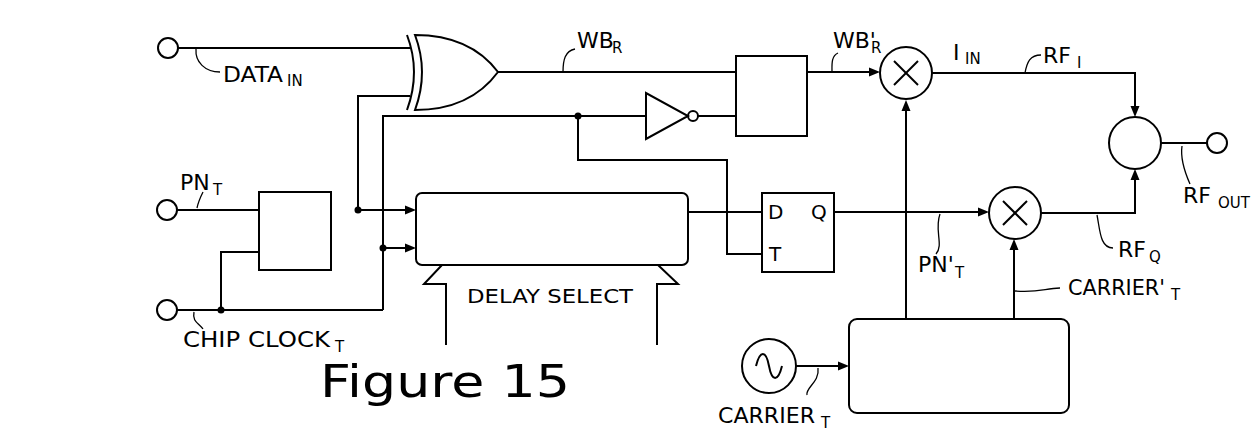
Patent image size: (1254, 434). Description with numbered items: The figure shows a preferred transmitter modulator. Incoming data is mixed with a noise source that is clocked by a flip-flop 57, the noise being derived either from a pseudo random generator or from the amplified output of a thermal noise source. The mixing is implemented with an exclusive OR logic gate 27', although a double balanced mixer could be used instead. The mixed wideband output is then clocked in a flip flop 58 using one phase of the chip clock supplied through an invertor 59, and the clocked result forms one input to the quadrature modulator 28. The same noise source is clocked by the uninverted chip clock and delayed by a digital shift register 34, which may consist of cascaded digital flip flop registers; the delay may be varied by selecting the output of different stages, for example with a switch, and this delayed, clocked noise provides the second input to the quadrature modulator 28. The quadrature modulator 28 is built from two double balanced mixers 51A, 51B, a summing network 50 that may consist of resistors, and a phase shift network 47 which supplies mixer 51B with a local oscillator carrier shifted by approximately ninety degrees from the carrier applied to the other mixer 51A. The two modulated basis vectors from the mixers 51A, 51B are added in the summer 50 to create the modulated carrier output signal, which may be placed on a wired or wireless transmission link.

The exclusive OR logic gate 27' is at (461, 57).
The flip-flop 57 is at (290, 192).
The digital shift register 34 is at (462, 193).
The invertor 59 is at (666, 130).
The flip flop 58 is at (771, 137).
The double balanced mixer 51A is at (931, 88).
The double balanced mixer 51B is at (1000, 188).
The summing network 50 is at (1108, 155).
The quadrature modulator 28 is at (1156, 59).
The phase shift network 47 is at (1070, 368).